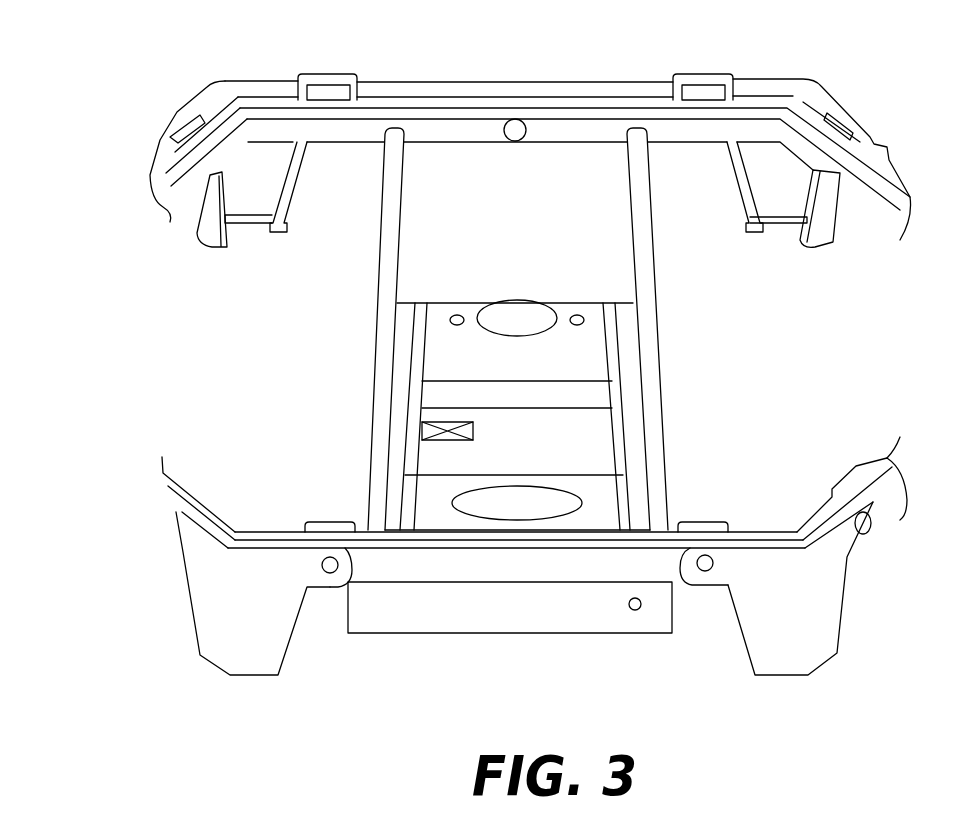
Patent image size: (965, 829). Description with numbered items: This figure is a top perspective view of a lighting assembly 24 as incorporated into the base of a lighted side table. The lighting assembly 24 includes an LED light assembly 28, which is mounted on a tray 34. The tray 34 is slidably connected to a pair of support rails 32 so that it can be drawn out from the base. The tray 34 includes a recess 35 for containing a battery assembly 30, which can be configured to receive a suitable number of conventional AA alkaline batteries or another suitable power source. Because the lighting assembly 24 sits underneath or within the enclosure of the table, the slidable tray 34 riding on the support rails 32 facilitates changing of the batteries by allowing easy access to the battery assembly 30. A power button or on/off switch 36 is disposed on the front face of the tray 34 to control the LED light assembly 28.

The lighting assembly 24 is at (772, 278).
The LED light assembly 28 is at (492, 317).
The battery assembly 30 is at (585, 500).
The support rails 32 is at (386, 224).
The tray 34 is at (600, 433).
The recess 35 is at (418, 505).
The on/off switch 36 is at (635, 612).